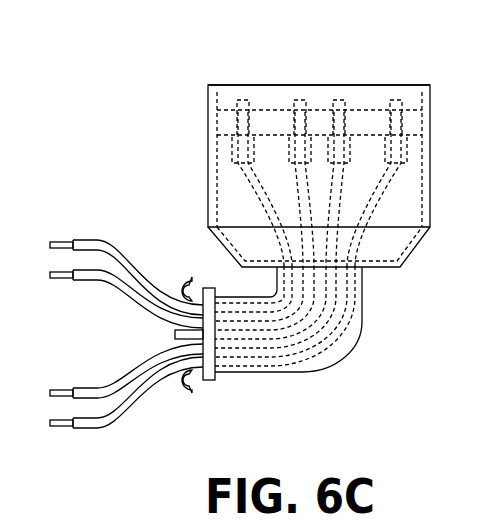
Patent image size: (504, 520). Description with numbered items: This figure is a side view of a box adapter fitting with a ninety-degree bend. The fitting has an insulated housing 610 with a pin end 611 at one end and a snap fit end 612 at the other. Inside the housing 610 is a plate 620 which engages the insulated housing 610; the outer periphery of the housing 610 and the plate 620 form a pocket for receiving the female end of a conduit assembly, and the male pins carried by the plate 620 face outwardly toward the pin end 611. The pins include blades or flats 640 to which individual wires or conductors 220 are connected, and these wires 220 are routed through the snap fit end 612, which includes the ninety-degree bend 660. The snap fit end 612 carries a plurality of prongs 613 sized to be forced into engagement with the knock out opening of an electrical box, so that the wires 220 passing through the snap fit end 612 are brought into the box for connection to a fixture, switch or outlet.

The insulated housing 610 is at (432, 145).
The pin end 611 is at (278, 85).
The plate 620 is at (318, 107).
The blades or flats 640 is at (405, 152).
The 90-degree bend 660 is at (363, 310).
The snap fit end 612 is at (215, 375).
The prongs 613 is at (183, 392).
The wires or conductors 220 is at (128, 413).